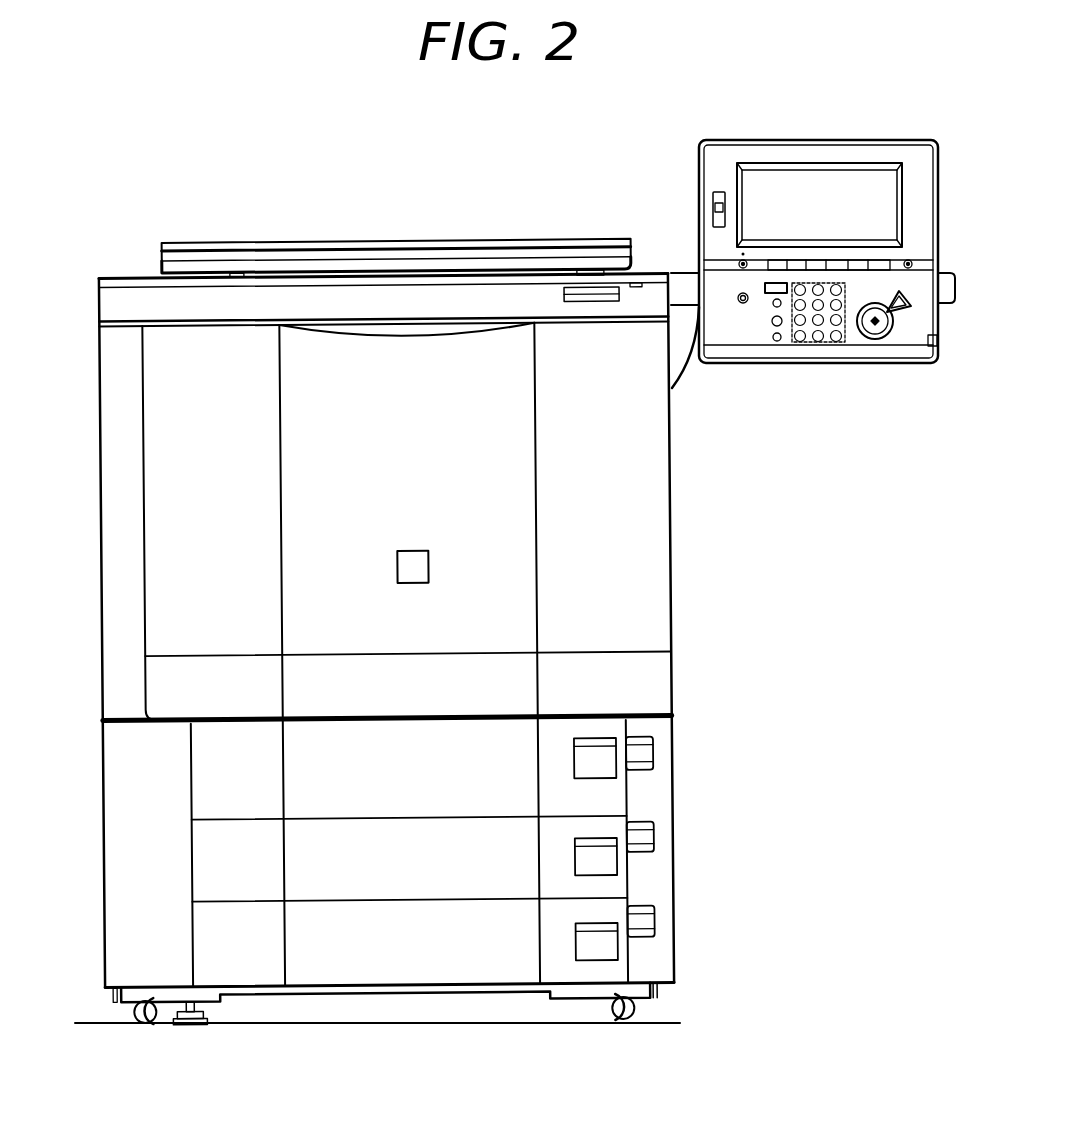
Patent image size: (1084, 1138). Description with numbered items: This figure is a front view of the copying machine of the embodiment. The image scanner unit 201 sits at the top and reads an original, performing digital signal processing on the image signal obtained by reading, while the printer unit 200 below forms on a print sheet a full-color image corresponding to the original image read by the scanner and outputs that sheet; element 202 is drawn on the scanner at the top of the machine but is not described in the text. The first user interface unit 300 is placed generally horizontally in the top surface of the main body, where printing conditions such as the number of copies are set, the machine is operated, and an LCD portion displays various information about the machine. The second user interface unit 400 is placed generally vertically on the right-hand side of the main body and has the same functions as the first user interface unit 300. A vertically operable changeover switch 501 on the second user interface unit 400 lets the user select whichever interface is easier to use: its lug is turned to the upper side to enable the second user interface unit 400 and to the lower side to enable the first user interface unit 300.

The printer unit 200 is at (643, 512).
The image scanner unit 201 is at (157, 277).
The original feeding device 202 is at (492, 243).
The first user interface unit 300 is at (127, 297).
The second user interface unit 400 is at (723, 165).
The changeover switch 501 is at (712, 201).